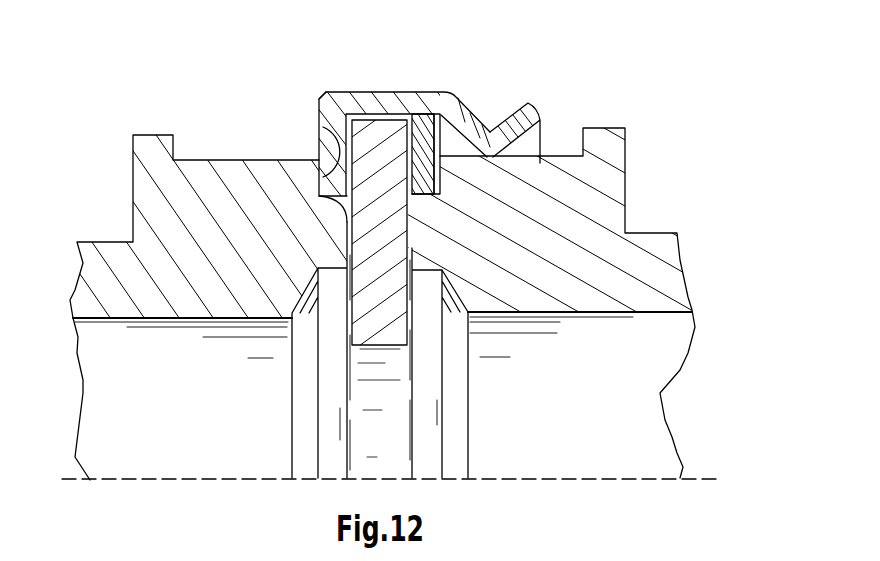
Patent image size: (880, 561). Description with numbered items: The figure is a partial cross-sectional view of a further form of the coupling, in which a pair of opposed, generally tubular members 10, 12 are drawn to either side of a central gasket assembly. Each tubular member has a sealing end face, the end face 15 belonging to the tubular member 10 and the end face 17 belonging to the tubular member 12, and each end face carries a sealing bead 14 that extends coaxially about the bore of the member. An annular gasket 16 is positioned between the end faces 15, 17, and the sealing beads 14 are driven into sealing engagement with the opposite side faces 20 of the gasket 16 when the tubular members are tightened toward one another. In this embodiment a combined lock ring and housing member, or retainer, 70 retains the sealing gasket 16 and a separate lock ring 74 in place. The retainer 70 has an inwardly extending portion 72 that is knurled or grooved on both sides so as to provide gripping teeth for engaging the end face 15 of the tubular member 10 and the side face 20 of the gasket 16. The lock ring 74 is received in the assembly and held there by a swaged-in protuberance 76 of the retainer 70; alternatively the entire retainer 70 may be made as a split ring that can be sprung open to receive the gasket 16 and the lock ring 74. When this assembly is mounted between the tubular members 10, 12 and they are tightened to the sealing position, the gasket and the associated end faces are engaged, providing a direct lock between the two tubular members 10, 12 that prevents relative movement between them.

The tubular member 10 is at (112, 262).
The tubular member 12 is at (607, 181).
The sealing bead 14 is at (341, 250).
The sealing end face 15 is at (327, 137).
The annular gasket 16 is at (380, 337).
The sealing end face 17 is at (428, 194).
The side face 20 is at (350, 262).
The retainer 70 is at (373, 92).
The inwardly extending portion 72 is at (323, 137).
The lock ring 74 is at (410, 196).
The swaged-in protuberance 76 is at (541, 134).